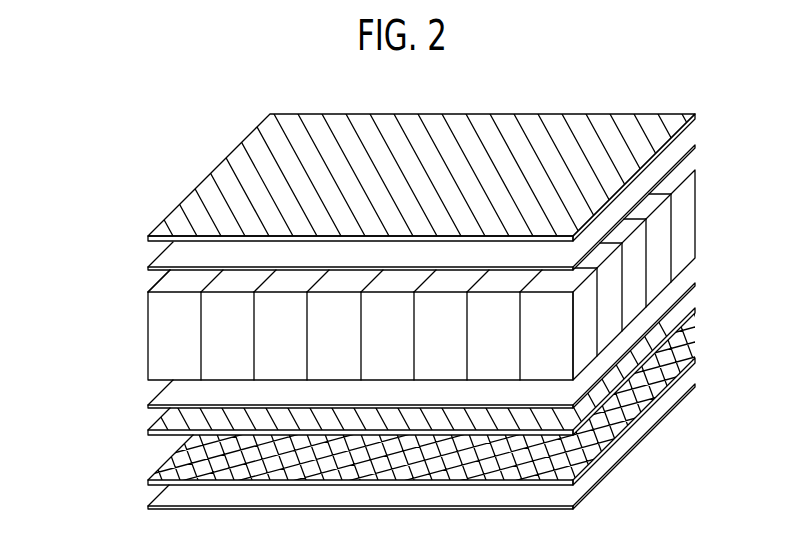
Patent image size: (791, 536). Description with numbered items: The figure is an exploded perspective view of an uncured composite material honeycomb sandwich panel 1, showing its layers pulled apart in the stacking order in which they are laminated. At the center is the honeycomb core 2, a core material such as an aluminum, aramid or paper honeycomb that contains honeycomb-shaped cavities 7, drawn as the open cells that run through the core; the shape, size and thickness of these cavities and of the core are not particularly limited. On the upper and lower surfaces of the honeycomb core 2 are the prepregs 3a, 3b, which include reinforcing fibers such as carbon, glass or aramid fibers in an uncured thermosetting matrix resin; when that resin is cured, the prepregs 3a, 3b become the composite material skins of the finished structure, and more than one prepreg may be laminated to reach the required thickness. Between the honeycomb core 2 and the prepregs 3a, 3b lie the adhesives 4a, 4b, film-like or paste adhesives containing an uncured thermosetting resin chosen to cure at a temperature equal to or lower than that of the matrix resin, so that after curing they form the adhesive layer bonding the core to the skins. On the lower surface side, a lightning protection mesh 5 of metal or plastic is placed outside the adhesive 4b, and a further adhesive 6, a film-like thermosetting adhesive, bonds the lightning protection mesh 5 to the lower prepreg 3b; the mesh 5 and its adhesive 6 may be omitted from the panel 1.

The uncured composite material honeycomb sandwich panel 1 is at (28, 88).
The honeycomb core 2 is at (678, 213).
The prepreg 3a is at (667, 122).
The prepreg 3b is at (662, 327).
The adhesive 4a is at (665, 160).
The adhesive 4b is at (667, 292).
The lightning protection mesh 5 is at (663, 368).
The adhesive 6 is at (653, 411).
The cavity 7 is at (170, 279).